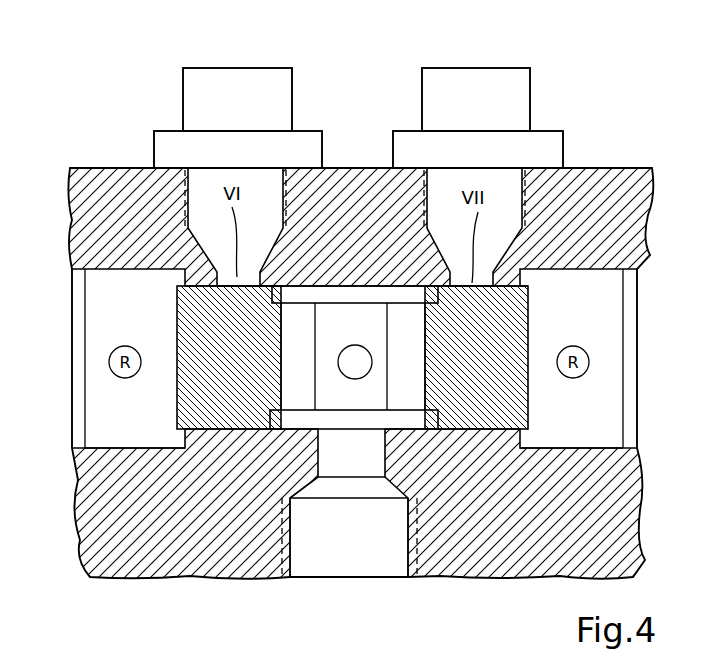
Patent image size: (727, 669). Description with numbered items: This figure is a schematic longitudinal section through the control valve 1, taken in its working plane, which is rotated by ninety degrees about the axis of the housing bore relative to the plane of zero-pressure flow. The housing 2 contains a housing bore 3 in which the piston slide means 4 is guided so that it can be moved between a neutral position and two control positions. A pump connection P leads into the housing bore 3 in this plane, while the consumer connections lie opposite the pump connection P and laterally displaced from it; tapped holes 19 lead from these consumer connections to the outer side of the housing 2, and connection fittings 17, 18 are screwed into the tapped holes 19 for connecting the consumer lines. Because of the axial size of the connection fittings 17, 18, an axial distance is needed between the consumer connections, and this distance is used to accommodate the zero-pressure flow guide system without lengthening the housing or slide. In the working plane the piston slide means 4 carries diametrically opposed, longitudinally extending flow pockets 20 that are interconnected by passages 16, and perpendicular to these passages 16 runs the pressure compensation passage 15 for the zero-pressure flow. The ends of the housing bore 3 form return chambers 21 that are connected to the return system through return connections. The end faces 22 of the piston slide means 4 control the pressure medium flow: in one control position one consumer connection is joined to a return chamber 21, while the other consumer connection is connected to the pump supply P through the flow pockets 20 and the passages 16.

The control valve 1 is at (360, 293).
The housing 2 is at (380, 212).
The housing bore 3 is at (325, 287).
The piston slide means 4 is at (238, 334).
The pressure compensation passage 15 is at (351, 356).
The passages 16 is at (307, 373).
The connection fitting 17 is at (502, 97).
The connection fitting 18 is at (217, 88).
The tapped holes 19 is at (290, 200).
The flow pockets 20 is at (353, 293).
The return chambers 21 is at (122, 425).
The end faces 22 is at (178, 397).
The pump connection P is at (348, 453).